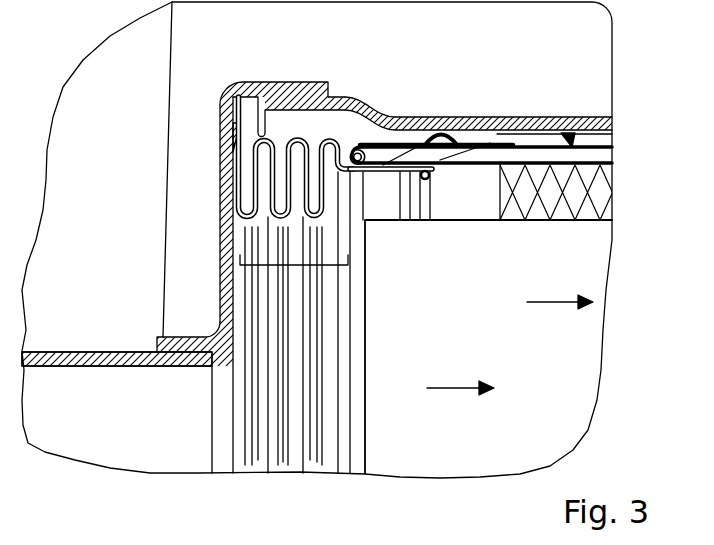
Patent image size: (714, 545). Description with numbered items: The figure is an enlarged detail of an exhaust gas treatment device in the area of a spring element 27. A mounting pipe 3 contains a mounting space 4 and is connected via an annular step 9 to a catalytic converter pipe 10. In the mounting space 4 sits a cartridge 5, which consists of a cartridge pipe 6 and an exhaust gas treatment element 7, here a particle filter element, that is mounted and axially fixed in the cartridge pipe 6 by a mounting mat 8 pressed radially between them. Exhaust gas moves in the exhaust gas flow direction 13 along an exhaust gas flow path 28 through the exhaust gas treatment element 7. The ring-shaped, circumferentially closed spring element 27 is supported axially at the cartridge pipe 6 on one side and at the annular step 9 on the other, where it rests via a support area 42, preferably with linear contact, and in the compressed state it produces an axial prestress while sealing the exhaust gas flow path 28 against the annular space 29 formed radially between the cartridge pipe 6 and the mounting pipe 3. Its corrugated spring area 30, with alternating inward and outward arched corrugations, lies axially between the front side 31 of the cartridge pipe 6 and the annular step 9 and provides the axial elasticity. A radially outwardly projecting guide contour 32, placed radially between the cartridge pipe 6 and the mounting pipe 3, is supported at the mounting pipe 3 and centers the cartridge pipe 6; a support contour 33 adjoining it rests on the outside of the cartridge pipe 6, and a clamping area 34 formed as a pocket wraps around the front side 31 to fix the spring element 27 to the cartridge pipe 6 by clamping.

The mounting pipe 3 is at (477, 106).
The mounting space 4 is at (558, 133).
The cartridge 5 is at (567, 132).
The cartridge pipe 6 is at (482, 157).
The exhaust gas treatment element 7 is at (516, 374).
The mounting mat 8 is at (597, 192).
The annular step 9 is at (208, 176).
The catalytic converter pipe 10 is at (87, 340).
The exhaust gas flow direction 13 is at (453, 390).
The spring element 27 is at (294, 120).
The exhaust gas flow path 28 is at (553, 304).
The annular space 29 is at (590, 143).
The spring area 30 is at (295, 265).
The front side 31 is at (350, 150).
The guide contour 32 is at (434, 131).
The support contour 33 is at (490, 143).
The clamping area 34 is at (391, 146).
The support area 42 is at (236, 192).